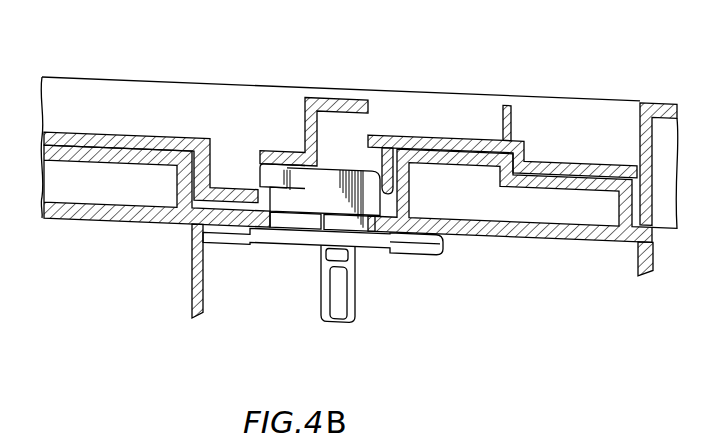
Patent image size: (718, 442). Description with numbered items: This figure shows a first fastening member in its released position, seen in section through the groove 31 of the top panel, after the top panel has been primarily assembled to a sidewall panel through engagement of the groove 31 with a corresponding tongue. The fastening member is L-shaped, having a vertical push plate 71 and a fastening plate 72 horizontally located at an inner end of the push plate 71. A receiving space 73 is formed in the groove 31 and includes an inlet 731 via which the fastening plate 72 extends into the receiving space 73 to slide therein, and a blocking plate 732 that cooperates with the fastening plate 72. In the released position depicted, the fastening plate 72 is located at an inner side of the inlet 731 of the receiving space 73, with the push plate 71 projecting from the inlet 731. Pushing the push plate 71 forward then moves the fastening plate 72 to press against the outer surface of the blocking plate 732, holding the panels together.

The groove 31 is at (122, 98).
The push plate 71 is at (333, 302).
The fastening plate 72 is at (360, 197).
The receiving space 73 is at (343, 152).
The inlet 731 is at (384, 235).
The blocking plate 732 is at (240, 192).